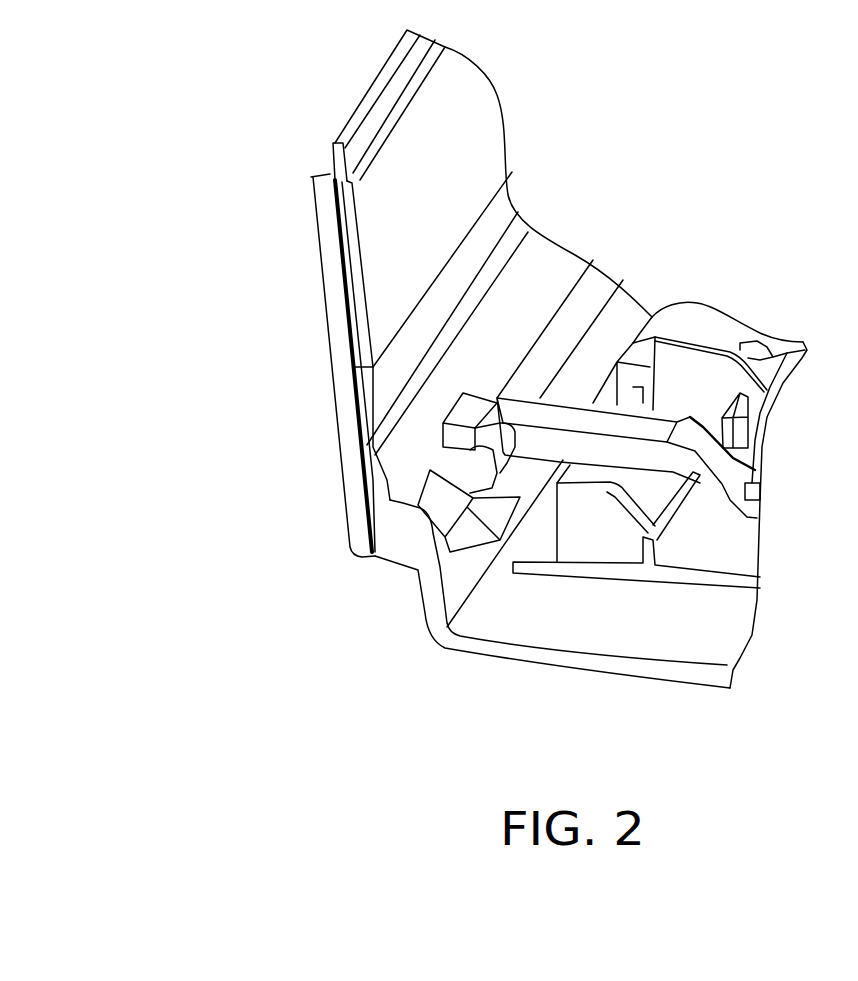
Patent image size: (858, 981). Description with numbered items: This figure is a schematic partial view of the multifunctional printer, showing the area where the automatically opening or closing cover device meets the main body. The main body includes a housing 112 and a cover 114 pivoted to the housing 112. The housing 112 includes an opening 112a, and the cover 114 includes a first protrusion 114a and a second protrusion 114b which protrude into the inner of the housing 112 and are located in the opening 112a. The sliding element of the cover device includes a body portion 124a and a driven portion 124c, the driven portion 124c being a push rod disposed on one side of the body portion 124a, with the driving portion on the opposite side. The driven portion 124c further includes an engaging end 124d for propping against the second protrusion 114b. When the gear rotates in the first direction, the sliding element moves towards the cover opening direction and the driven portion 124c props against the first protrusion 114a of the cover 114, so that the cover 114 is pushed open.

The housing 112 is at (350, 230).
The opening 112a is at (392, 470).
The cover 114 is at (337, 297).
The first protrusion 114a is at (460, 405).
The second protrusion 114b is at (413, 572).
The body portion 124a is at (647, 583).
The driven portion 124c is at (612, 423).
The engaging end 124d is at (490, 437).